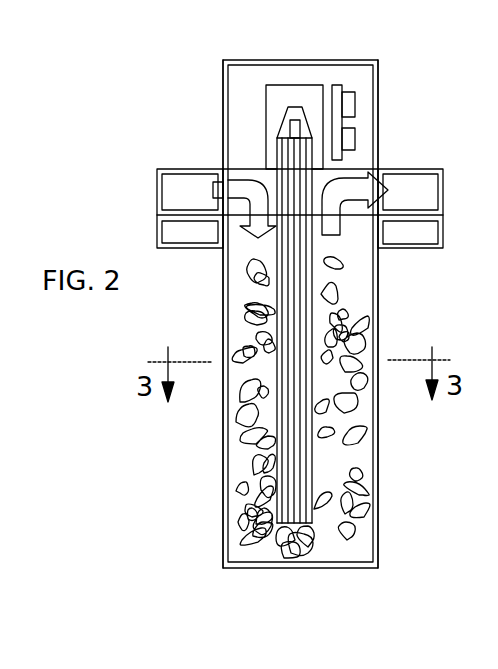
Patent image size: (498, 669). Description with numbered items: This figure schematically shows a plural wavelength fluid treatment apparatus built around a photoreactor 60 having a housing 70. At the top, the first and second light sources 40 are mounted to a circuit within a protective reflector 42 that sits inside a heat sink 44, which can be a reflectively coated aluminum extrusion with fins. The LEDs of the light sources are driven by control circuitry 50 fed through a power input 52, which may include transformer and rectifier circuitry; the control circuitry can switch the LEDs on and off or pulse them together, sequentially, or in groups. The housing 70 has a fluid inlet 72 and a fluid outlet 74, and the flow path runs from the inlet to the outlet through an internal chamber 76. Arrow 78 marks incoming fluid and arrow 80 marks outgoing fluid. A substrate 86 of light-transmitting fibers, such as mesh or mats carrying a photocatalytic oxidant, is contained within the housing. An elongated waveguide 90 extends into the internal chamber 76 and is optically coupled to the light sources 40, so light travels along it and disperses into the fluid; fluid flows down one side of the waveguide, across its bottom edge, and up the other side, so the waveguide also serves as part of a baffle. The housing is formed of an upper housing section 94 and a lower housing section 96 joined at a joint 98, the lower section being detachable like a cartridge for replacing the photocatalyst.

The light sources 40 is at (338, 86).
The protective reflector 42 is at (292, 122).
The heat sink 44 is at (282, 93).
The control circuitry 50 is at (302, 108).
The power input 52 is at (356, 106).
The photoreactor 60 is at (393, 493).
The housing 70 is at (378, 318).
The fluid inlet 72 is at (177, 177).
The fluid outlet 74 is at (430, 188).
The internal chamber 76 is at (364, 302).
The arrow indicating incoming fluid 78 is at (250, 183).
The arrow indicating outgoing fluid 80 is at (377, 190).
The substrate 86 is at (358, 430).
The elongated waveguide 90 is at (290, 510).
The upper housing section 94 is at (223, 80).
The lower housing section 96 is at (222, 425).
The joint 98 is at (157, 215).